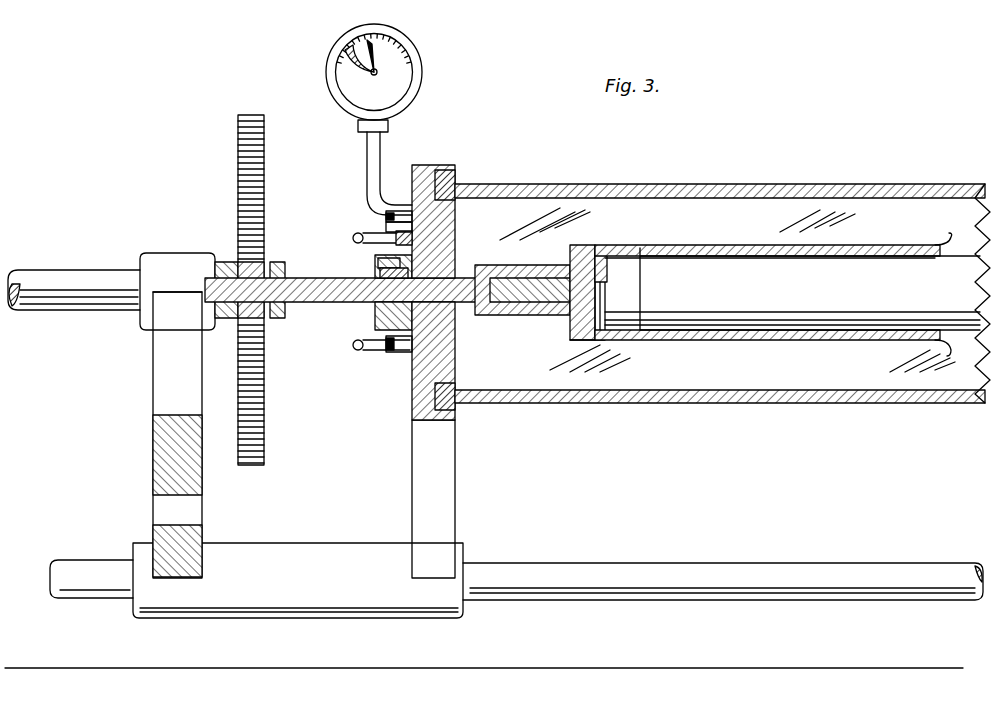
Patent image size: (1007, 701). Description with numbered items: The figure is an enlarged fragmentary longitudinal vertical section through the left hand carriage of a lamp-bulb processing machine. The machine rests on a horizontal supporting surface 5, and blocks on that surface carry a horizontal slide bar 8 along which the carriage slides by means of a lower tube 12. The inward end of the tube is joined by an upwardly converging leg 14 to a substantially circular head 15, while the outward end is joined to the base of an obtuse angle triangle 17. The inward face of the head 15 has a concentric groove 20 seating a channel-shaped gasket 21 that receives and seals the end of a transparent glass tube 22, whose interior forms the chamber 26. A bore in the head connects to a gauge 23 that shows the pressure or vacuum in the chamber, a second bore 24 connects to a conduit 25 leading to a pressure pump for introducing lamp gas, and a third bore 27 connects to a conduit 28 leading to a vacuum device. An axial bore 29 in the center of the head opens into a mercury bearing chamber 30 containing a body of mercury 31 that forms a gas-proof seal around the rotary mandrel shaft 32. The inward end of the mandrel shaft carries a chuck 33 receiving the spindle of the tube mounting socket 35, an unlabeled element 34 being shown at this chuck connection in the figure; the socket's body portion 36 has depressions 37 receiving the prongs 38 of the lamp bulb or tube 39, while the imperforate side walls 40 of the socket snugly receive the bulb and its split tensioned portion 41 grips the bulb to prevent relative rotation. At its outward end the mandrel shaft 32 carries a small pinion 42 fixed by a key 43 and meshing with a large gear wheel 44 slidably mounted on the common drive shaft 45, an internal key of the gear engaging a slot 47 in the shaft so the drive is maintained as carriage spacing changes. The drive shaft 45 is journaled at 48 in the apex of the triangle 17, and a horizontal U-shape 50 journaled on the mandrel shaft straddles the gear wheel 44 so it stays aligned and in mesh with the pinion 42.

The horizontal supporting surface 5 is at (576, 670).
The slide bar 8 is at (510, 570).
The lower tube 12 is at (252, 550).
The upwardly converging leg 14 is at (411, 480).
The circular head 15 is at (426, 166).
The obtuse angle triangle 17 is at (150, 455).
The concentric groove 20 is at (447, 172).
The channel-shaped gasket 21 is at (457, 406).
The transparent glass tube 22 is at (456, 216).
The gauge 23 is at (423, 69).
The second bore 24 is at (456, 240).
The conduit 25 is at (366, 233).
The chamber 26 is at (748, 200).
The third bore 27 is at (456, 346).
The conduit 28 is at (370, 352).
The axial bore 29 is at (452, 272).
The mercury bearing chamber 30 is at (375, 330).
The body of mercury 31 is at (377, 268).
The rotary mandrel shaft 32 is at (311, 303).
The chuck 33 is at (527, 263).
The piston rod 34 is at (516, 303).
The tube mounting socket 35 is at (667, 246).
The body portion 36 is at (583, 340).
The depressions 37 is at (584, 266).
The prongs 38 is at (596, 300).
The lamp bulb or tube 39 is at (950, 246).
The imperforate side walls 40 is at (636, 340).
The split tensioned portion 41 is at (860, 257).
The pinion 42 is at (232, 317).
The key 43 is at (265, 263).
The gear wheel 44 is at (238, 157).
The common drive shaft 45 is at (77, 279).
The slot 47 is at (24, 290).
The journal 48 is at (163, 254).
The U-shape 50 is at (283, 265).